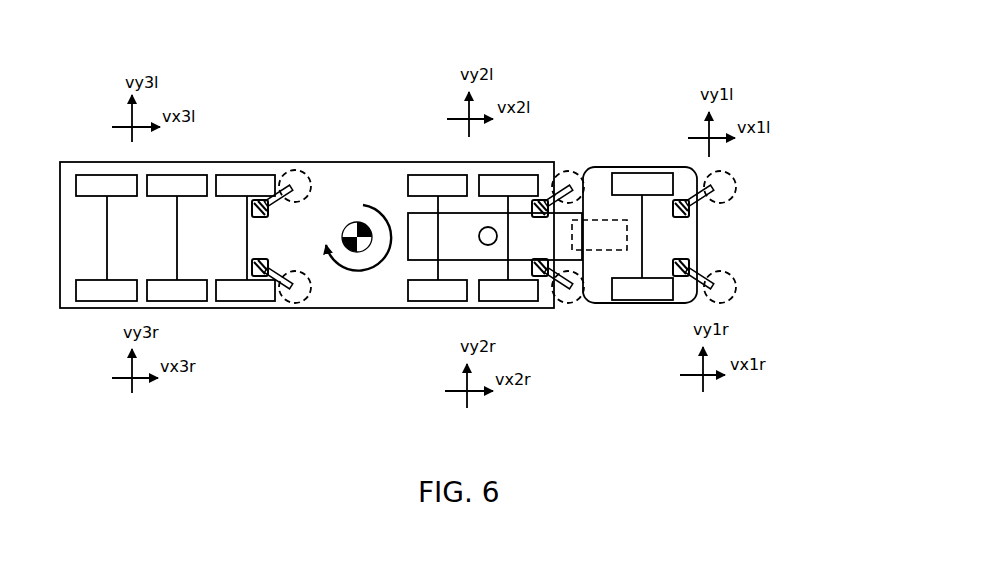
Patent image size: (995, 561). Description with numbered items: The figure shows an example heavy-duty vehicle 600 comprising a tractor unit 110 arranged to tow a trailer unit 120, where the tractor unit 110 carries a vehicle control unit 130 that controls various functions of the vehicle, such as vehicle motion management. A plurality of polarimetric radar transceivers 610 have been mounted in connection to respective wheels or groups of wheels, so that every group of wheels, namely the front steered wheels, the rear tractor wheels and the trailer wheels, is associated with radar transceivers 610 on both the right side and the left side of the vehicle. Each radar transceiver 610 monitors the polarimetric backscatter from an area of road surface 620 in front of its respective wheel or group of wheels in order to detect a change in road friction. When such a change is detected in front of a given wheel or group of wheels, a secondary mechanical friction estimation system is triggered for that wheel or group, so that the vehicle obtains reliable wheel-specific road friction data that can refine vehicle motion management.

The vehicle combination with sensor arrangement 600 is at (797, 73).
The tractor unit 110 is at (632, 167).
The trailer unit 120 is at (378, 177).
The vehicle control unit 130 is at (599, 235).
The polarimetric radar transceiver 610 is at (264, 200).
The area of road surface 620 is at (309, 172).